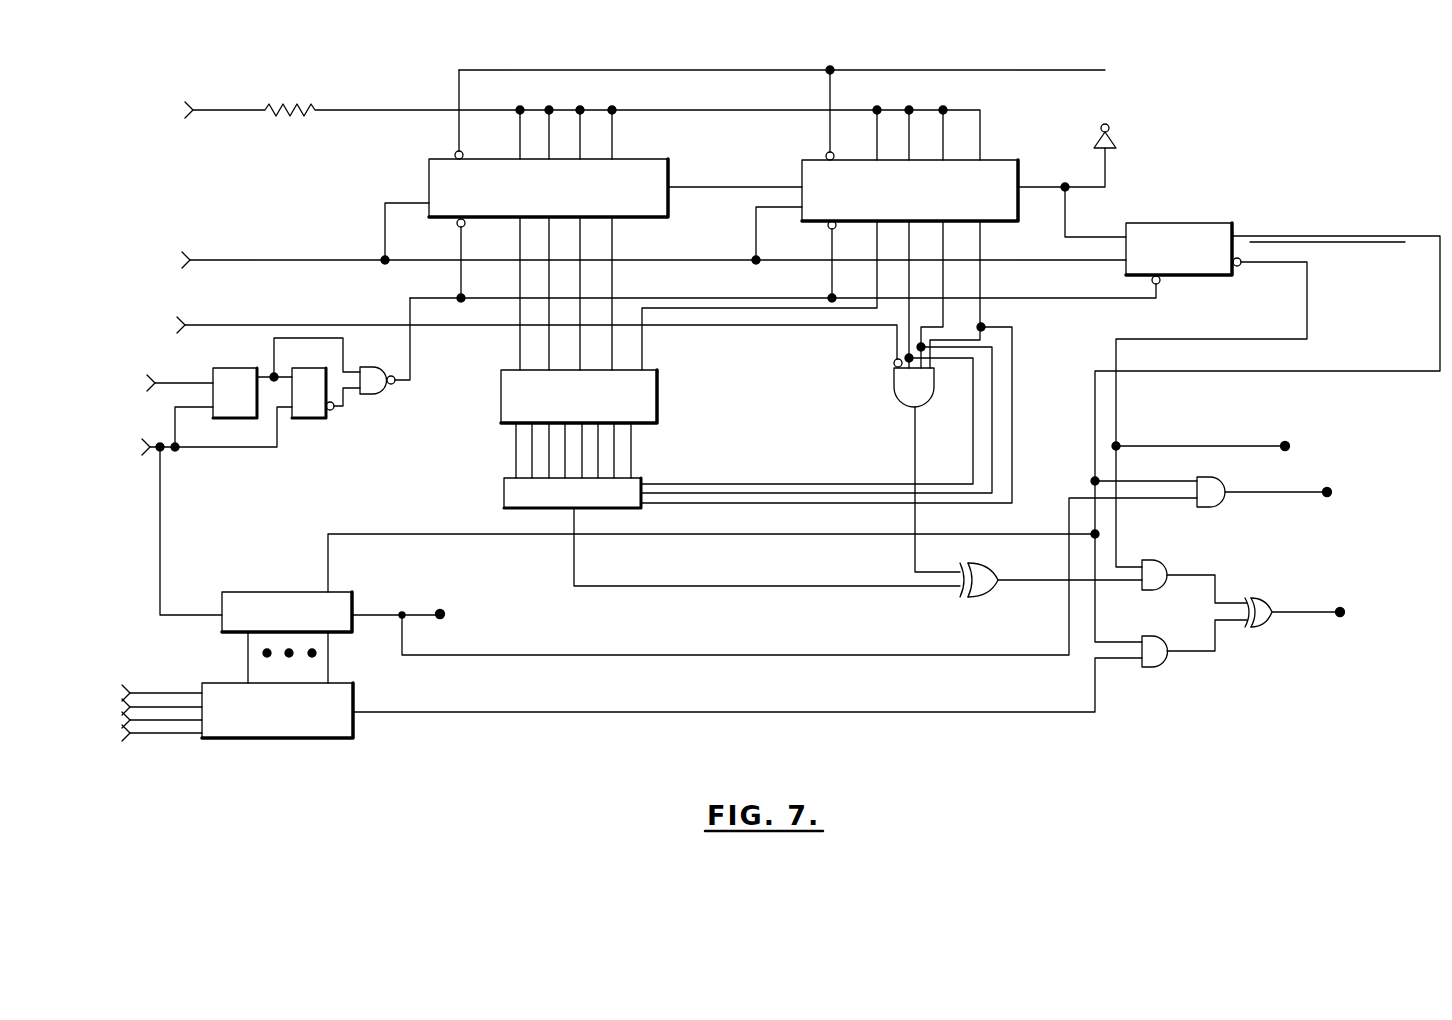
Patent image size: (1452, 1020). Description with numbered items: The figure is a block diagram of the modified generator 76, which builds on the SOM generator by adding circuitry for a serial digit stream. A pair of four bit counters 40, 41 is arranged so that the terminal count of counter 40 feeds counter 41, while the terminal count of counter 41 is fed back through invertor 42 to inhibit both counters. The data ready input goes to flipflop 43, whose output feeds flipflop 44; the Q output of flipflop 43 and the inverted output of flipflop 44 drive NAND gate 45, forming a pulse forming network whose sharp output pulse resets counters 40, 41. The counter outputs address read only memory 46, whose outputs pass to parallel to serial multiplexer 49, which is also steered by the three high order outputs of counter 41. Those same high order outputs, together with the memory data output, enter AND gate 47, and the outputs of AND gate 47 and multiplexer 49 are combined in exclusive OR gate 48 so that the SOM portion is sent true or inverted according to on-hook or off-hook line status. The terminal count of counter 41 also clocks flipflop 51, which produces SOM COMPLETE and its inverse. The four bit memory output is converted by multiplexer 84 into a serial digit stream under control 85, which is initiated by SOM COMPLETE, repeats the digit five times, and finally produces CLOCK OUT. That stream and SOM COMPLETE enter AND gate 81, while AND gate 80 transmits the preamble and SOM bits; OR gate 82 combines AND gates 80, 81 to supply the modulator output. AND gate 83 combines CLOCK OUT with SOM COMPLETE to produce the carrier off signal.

The four bit counter 40 is at (667, 180).
The four bit counter 41 is at (1010, 182).
The invertor 42 is at (1116, 140).
The flipflop 43 is at (246, 368).
The flipflop 44 is at (318, 418).
The NAND gate 45 is at (385, 386).
The read only memory 46 is at (636, 397).
The AND gate 47 is at (912, 388).
The exclusive OR gate 48 is at (985, 573).
The parallel to serial multiplexer 49 is at (505, 492).
The flipflop 51 is at (1188, 224).
The generator 76 is at (749, 461).
The AND gate 80 is at (1160, 566).
The AND gate 81 is at (1158, 662).
The OR gate 82 is at (1280, 590).
The AND gate 83 is at (1216, 480).
The multiplexer 84 is at (330, 701).
The control 85 is at (338, 601).